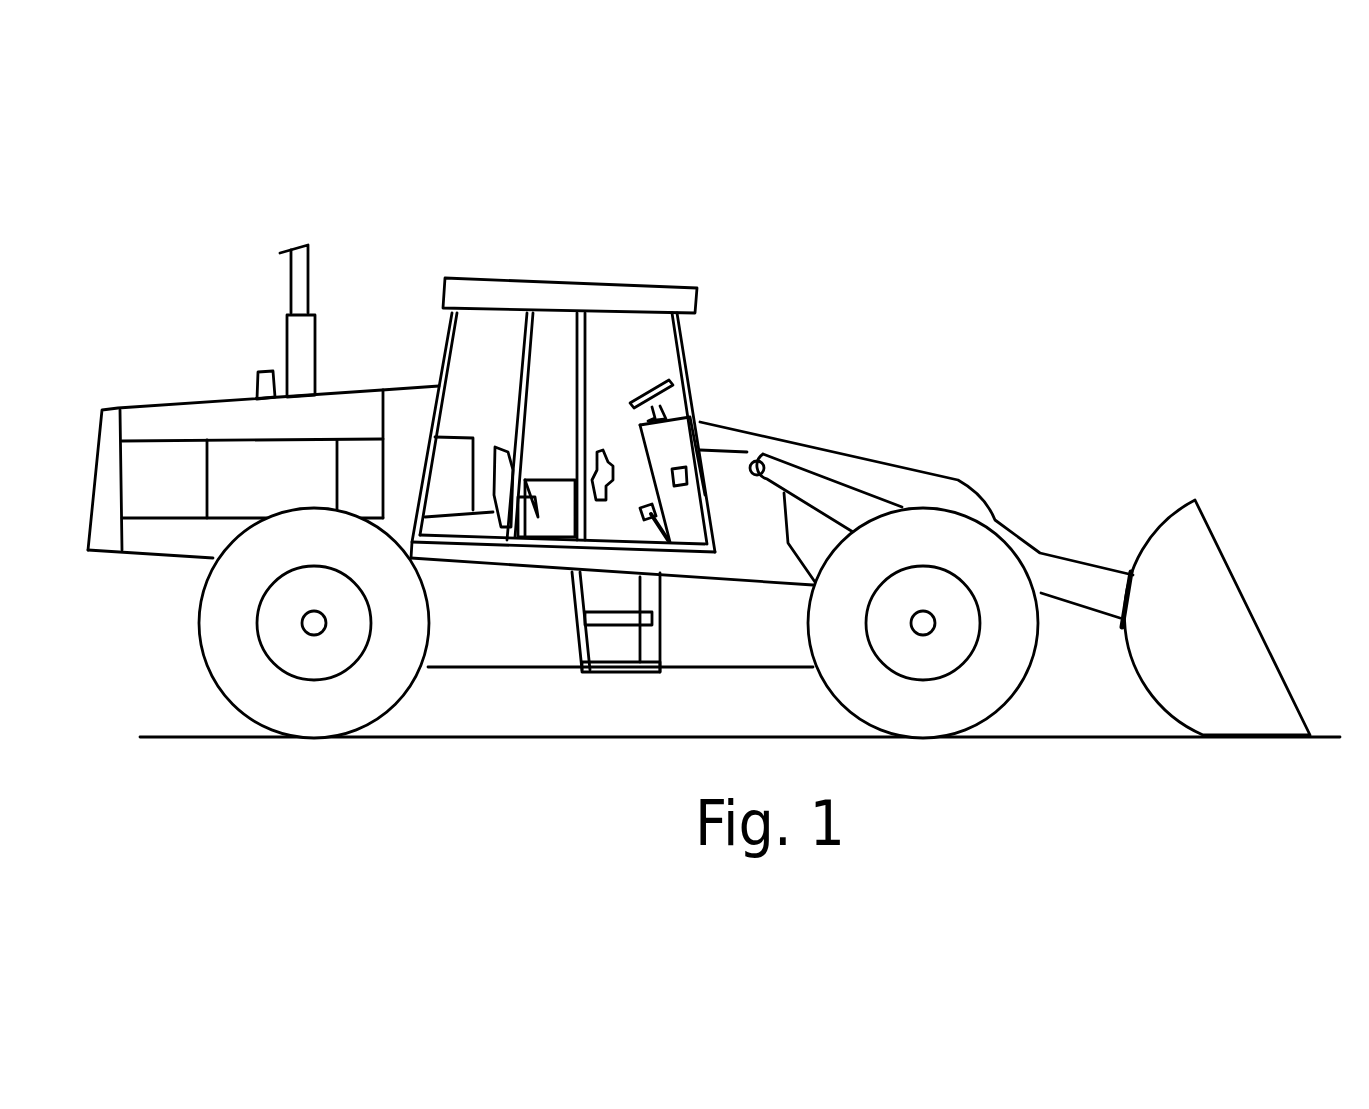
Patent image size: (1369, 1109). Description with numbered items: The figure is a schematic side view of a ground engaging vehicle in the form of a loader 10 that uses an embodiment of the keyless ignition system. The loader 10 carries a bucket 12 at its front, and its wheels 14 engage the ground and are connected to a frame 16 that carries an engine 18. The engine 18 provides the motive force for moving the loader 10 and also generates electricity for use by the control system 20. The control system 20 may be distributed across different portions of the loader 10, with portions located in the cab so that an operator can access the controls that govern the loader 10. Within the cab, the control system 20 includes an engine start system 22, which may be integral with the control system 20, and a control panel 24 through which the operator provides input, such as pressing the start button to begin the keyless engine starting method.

The loader 10 is at (714, 491).
The bucket 12 is at (1228, 567).
The wheels 14 is at (197, 647).
The frame 16 is at (513, 668).
The engine 18 is at (201, 425).
The control system 20 is at (773, 437).
The engine start system 22 is at (773, 437).
The control panel 24 is at (687, 474).